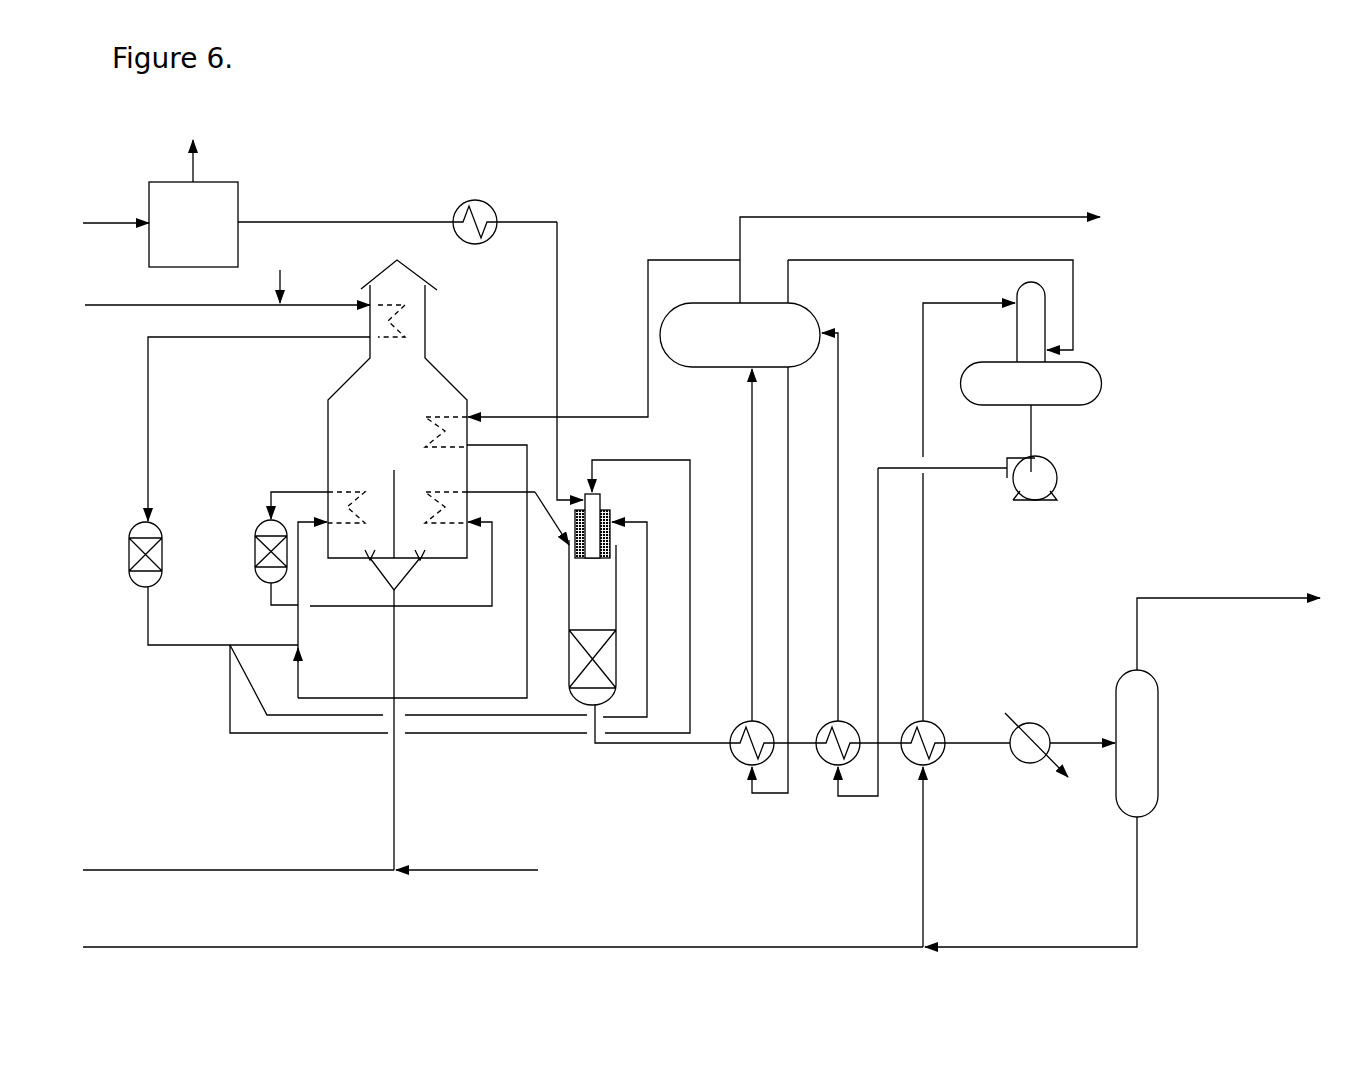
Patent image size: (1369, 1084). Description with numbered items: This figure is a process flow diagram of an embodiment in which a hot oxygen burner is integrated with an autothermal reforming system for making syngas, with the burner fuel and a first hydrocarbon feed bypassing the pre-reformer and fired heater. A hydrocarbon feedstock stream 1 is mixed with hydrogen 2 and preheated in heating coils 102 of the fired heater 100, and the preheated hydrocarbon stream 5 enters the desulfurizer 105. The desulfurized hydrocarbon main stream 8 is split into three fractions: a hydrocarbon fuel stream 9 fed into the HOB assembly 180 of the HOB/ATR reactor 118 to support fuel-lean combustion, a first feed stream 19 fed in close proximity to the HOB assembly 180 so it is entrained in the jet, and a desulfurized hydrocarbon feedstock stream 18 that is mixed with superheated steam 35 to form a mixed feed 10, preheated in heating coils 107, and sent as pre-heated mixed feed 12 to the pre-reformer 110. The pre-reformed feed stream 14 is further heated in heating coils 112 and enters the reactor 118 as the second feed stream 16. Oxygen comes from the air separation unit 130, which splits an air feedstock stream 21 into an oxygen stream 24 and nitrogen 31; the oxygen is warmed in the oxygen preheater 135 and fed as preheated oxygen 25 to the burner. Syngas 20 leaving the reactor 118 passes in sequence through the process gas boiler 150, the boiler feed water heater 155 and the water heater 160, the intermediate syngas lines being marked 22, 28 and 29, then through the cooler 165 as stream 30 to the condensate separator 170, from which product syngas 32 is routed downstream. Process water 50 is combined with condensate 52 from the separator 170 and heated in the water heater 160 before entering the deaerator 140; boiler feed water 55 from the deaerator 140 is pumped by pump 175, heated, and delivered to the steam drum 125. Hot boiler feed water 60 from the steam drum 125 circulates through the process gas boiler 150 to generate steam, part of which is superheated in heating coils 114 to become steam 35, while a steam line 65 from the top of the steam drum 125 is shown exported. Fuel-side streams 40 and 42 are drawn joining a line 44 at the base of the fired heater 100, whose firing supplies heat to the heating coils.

The hydrocarbon feedstock stream 1 is at (227, 293).
The hydrogen 2 is at (279, 276).
The preheated hydrocarbon stream 5 is at (259, 429).
The desulfurized hydrocarbon main stream 8 is at (223, 616).
The hydrocarbon fuel stream 9 is at (460, 596).
The mixed feed 10 is at (313, 610).
The pre-heated mixed feed 12 is at (299, 497).
The pre-reformed feed stream 14 is at (401, 583).
The pre-heated pre-reformed feed 16 is at (552, 524).
The desulfurized hydrocarbon feedstock stream 18 is at (274, 643).
The first feed stream 19 is at (438, 619).
The syngas 20 is at (662, 737).
The air feedstock stream 21 is at (114, 239).
The effluent stream after first exchanger 22 is at (802, 742).
The oxygen stream 24 is at (397, 209).
The preheated oxygen 25 is at (557, 361).
The effluent stream after second exchanger 28 is at (889, 742).
The effluent stream after third exchanger 29 is at (962, 742).
The stream to separator 30 is at (1070, 742).
The nitrogen 31 is at (210, 161).
The syngas 32 is at (1228, 618).
The superheated steam 35 is at (412, 572).
The water feed stream 40 is at (238, 856).
The water stream 42 is at (467, 859).
The bottoms stream 44 is at (411, 730).
The process water 50 is at (503, 927).
The condensate 52 is at (1031, 882).
The boiler feed water 55 is at (1053, 438).
The hot boiler feed water stream 60 is at (845, 516).
The steam export stream 65 is at (920, 248).
The fired heater 100 is at (397, 425).
The heating coils 102 is at (407, 320).
The desulfurizer 105 is at (128, 602).
The heating coils 107 is at (340, 490).
The pre-reformer 110 is at (252, 525).
The heating coils 112 is at (447, 496).
The heating coils 114 is at (450, 425).
The HOB/ATR reactor 118 is at (592, 622).
The steam drum 125 is at (740, 335).
The air separation unit 130 is at (193, 224).
The oxygen preheater 135 is at (475, 201).
The deaerator 140 is at (945, 332).
The process gas boiler 150 is at (750, 532).
The boiler feed water heater 155 is at (847, 658).
The water heater 160 is at (958, 625).
The cooler 165 is at (1036, 756).
The condensate separator 170 is at (1165, 743).
The pump 175 is at (967, 495).
The HOB assembly 180 is at (612, 512).